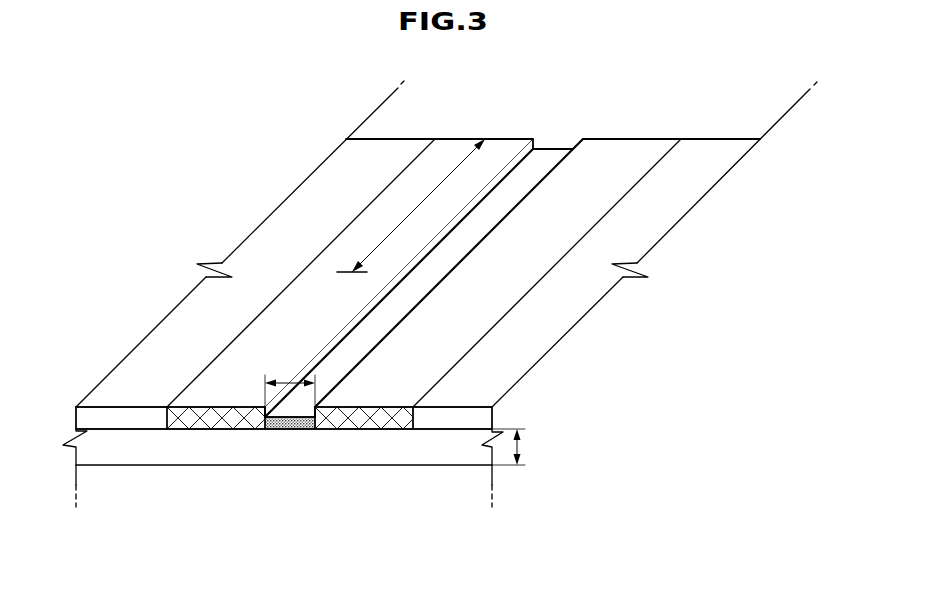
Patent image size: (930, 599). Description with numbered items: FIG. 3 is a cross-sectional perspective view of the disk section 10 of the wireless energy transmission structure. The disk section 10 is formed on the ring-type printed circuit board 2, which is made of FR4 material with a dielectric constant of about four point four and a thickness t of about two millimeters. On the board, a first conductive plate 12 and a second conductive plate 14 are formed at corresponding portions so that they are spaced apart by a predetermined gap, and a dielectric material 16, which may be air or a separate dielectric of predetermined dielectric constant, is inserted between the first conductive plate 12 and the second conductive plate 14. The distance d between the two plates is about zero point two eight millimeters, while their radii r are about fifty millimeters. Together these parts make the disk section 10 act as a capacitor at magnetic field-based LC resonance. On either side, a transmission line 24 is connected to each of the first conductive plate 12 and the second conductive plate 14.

The printed circuit board 2 is at (381, 447).
The disk section 10 is at (307, 482).
The first conductive plate 12 is at (222, 422).
The second conductive plate 14 is at (378, 461).
The dielectric material 16 is at (284, 424).
The transmission line 24 is at (130, 422).